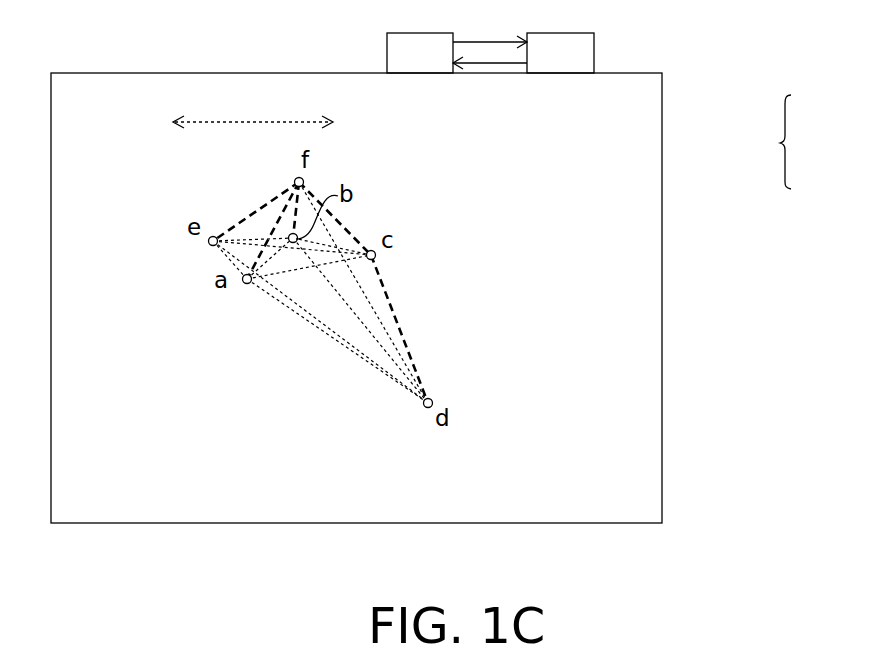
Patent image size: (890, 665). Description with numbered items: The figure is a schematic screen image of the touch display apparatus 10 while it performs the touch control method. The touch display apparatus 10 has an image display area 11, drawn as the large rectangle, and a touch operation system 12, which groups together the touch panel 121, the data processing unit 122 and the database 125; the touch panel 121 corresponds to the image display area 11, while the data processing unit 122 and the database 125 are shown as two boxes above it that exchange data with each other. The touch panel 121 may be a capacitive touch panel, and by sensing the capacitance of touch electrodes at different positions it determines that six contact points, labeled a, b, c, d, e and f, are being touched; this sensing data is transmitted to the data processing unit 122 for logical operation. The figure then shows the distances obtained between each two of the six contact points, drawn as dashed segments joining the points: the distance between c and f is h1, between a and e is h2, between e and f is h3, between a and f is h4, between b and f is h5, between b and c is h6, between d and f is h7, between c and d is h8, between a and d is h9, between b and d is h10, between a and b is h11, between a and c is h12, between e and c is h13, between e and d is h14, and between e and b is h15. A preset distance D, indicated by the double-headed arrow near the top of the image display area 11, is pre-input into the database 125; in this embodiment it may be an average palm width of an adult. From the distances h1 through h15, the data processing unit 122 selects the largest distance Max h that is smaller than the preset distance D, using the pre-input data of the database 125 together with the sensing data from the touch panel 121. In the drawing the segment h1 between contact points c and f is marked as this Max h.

The touch display apparatus 10 is at (65, 56).
The image display area 11 is at (168, 74).
The touch operation system 12 is at (793, 142).
The touch panel 121 is at (108, 112).
The data processing unit 122 is at (442, 64).
The database 125 is at (582, 64).
The preset distance D is at (253, 109).
The distance between contact points c and f h1 is at (340, 221).
The distance between contact points a and e h2 is at (230, 262).
The distance between contact points e and f h3 is at (273, 196).
The distance between contact points a and f h4 is at (266, 238).
The distance between contact points b and f h5 is at (312, 200).
The distance between contact points b and c h6 is at (345, 226).
The distance between contact points d and f h7 is at (403, 339).
The distance between contact points c and d h8 is at (409, 362).
The distance between contact points a and d h9 is at (382, 370).
The distance between contact points b and d h10 is at (353, 307).
The distance between contact points a and b h11 is at (265, 291).
The distance between contact points a and c h12 is at (346, 265).
The distance between contact points e and c h13 is at (290, 250).
The distance between contact points e and d h14 is at (306, 310).
The distance between contact points e and b h15 is at (292, 238).